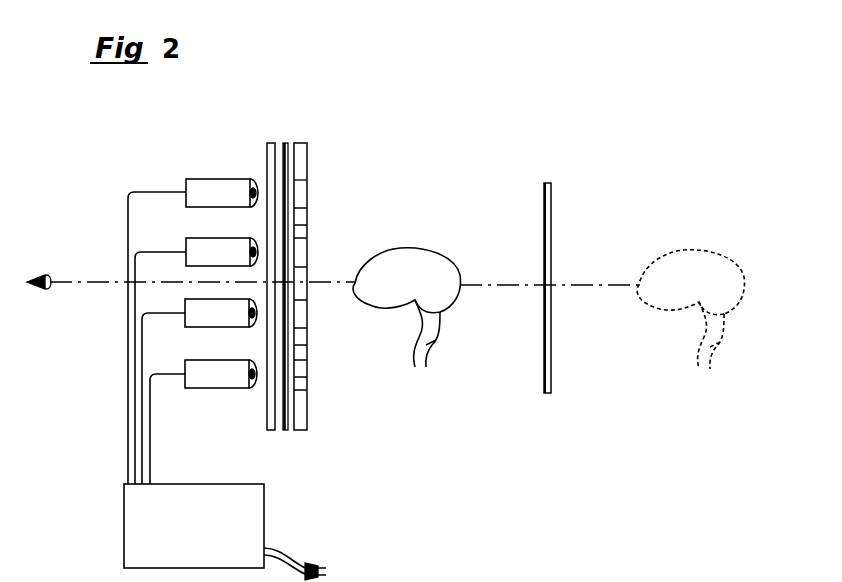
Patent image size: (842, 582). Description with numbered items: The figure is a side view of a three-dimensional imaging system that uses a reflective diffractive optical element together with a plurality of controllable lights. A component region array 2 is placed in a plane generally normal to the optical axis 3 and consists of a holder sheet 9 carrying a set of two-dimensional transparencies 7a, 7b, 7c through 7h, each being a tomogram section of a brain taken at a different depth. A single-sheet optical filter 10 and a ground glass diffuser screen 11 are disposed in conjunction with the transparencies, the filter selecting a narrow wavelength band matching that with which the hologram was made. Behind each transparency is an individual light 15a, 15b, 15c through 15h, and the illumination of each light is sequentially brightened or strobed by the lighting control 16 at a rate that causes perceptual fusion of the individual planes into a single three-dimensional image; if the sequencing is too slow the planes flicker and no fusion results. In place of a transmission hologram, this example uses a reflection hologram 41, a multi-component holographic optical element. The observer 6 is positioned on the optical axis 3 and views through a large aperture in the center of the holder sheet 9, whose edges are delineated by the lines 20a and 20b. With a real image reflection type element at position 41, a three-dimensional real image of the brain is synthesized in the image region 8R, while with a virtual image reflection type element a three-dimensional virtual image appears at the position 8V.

The component region array 2 is at (318, 283).
The optical axis 3 is at (596, 285).
The observer 6 is at (45, 273).
The transparency 7a is at (305, 315).
The transparency 7b is at (305, 255).
The transparency 7c is at (312, 195).
The transparency 7h is at (305, 378).
The real image region 8R is at (428, 218).
The virtual image region 8V is at (692, 265).
The holder sheet 9 is at (332, 264).
The optical filter 10 is at (285, 143).
The diffuser screen 11 is at (270, 143).
The light 15a is at (228, 320).
The light 15b is at (228, 248).
The light 15c is at (224, 189).
The light 15h is at (228, 382).
The lighting control 16 is at (255, 525).
The aperture edge line 20a is at (310, 222).
The aperture edge line 20b is at (305, 345).
The reflection hologram 41 is at (545, 393).